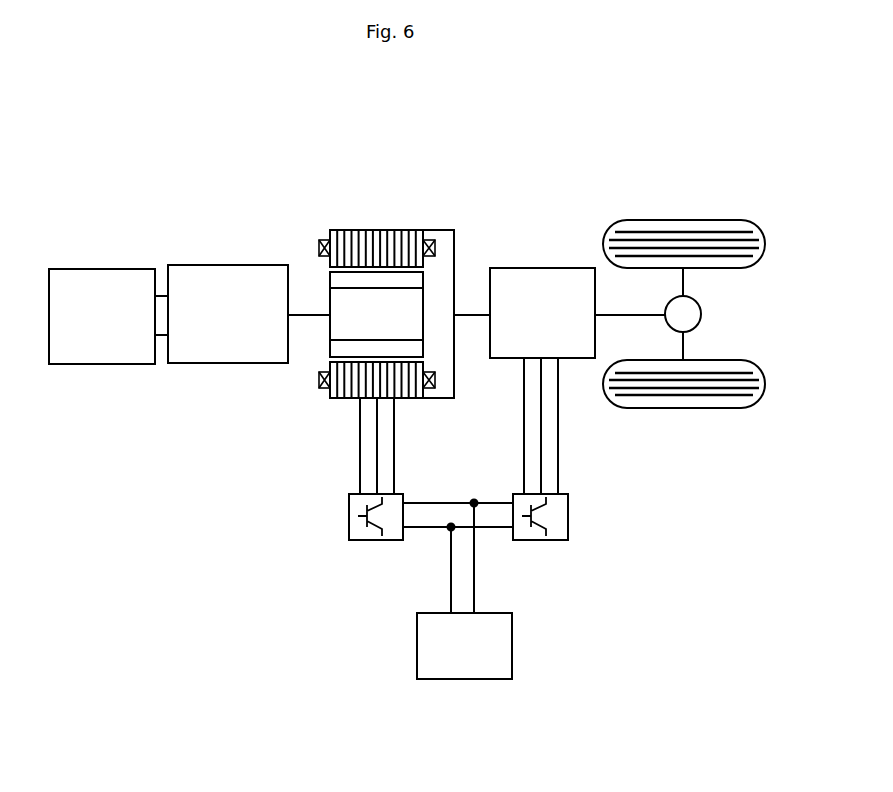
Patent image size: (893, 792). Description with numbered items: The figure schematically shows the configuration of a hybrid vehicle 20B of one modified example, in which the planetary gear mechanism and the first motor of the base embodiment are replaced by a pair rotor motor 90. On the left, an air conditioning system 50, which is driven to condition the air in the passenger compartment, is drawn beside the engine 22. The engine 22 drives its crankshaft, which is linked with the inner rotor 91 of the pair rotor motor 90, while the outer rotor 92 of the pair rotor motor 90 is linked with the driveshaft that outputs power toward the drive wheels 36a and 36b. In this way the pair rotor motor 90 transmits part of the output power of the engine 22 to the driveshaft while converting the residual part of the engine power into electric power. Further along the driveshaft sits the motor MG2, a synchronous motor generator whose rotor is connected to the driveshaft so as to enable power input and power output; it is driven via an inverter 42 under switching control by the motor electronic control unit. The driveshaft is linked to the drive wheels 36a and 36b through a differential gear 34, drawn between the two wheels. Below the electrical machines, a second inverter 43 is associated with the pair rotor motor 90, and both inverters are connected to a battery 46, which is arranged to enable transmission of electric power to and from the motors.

The hybrid vehicle 20B is at (446, 155).
The engine 22 is at (226, 265).
The differential gear 34 is at (702, 302).
The drive wheel 36a is at (682, 220).
The drive wheel 36b is at (707, 360).
The inverter 42 is at (568, 519).
The inverter for generator 43 is at (349, 517).
The battery 46 is at (512, 643).
The air conditioning system 50 is at (103, 269).
The pair rotor motor 90 is at (377, 265).
The inner rotor 91 is at (330, 288).
The outer rotor 92 is at (310, 176).
The motor MG2 is at (540, 268).